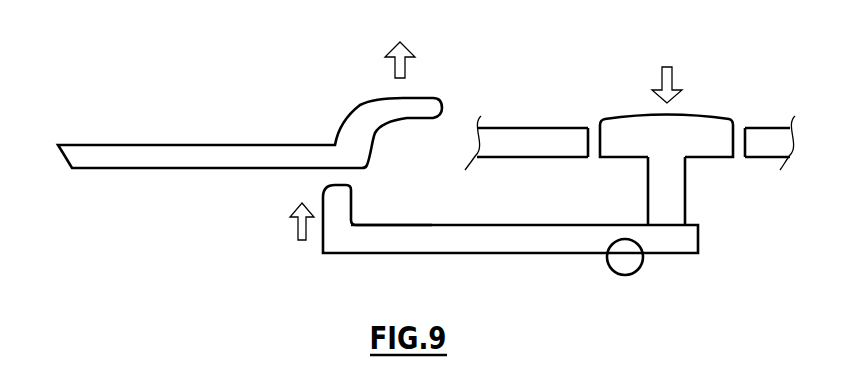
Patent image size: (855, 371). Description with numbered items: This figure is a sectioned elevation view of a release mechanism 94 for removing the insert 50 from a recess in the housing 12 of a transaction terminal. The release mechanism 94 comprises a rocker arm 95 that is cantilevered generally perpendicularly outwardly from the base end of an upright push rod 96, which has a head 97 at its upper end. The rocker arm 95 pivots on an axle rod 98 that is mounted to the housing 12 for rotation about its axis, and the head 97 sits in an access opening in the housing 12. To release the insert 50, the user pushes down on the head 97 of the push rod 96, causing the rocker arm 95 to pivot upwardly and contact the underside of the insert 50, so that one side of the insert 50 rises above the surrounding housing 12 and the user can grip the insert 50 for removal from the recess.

The insert 50 is at (153, 145).
The housing 12 is at (542, 128).
The head 97 is at (700, 112).
The push rod 96 is at (685, 195).
The release mechanism 94 is at (367, 263).
The rocker arm 95 is at (432, 225).
The axle rod 98 is at (630, 263).